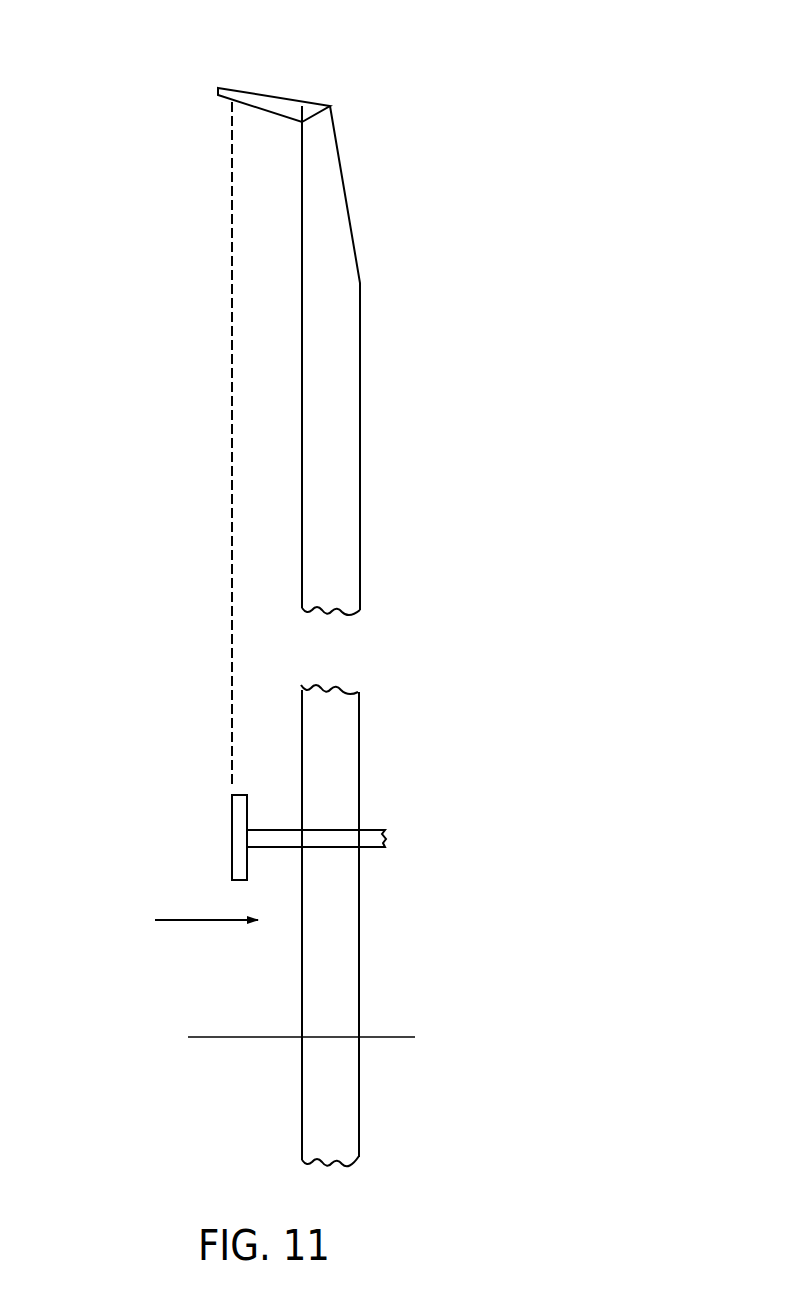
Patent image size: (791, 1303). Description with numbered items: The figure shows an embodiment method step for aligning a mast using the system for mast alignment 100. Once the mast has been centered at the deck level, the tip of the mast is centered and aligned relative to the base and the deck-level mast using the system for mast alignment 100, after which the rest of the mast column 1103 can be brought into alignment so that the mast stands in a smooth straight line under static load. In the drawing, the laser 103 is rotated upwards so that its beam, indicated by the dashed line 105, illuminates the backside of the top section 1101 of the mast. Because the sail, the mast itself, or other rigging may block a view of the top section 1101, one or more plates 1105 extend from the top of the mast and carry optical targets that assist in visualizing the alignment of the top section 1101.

The system for mast alignment 100 is at (97, 448).
The laser 103 is at (225, 818).
The reference plane 105 is at (225, 742).
The top section 1101 is at (328, 307).
The elongated arm member 1103 is at (345, 410).
The plates 1105 is at (268, 103).